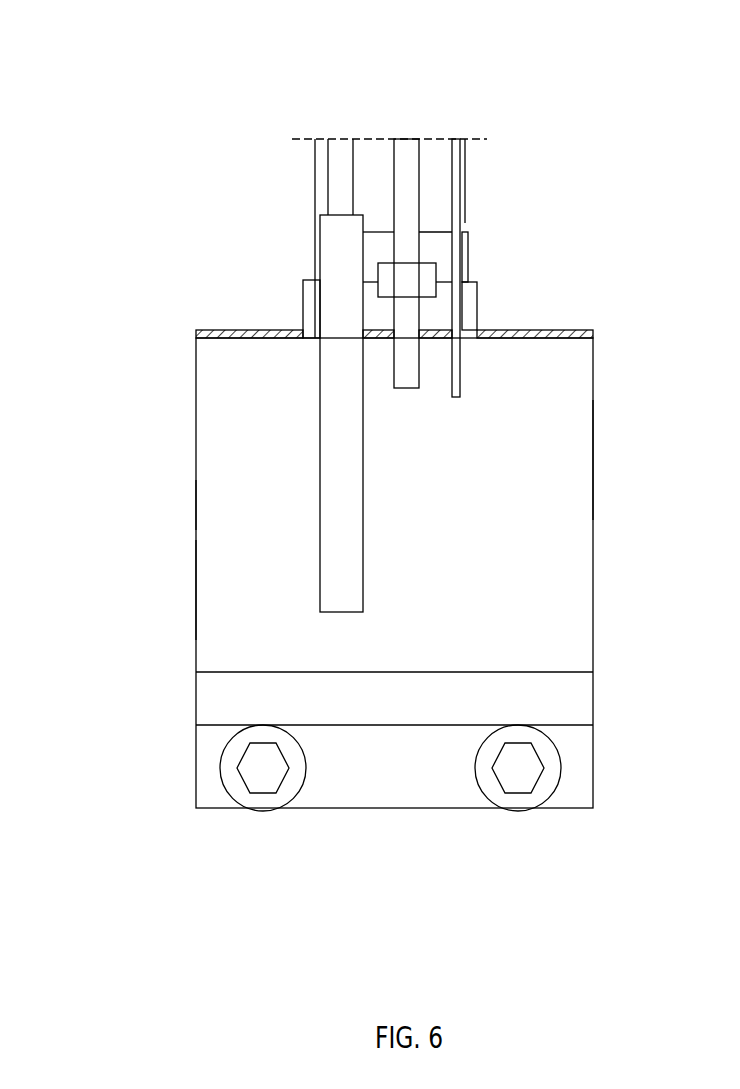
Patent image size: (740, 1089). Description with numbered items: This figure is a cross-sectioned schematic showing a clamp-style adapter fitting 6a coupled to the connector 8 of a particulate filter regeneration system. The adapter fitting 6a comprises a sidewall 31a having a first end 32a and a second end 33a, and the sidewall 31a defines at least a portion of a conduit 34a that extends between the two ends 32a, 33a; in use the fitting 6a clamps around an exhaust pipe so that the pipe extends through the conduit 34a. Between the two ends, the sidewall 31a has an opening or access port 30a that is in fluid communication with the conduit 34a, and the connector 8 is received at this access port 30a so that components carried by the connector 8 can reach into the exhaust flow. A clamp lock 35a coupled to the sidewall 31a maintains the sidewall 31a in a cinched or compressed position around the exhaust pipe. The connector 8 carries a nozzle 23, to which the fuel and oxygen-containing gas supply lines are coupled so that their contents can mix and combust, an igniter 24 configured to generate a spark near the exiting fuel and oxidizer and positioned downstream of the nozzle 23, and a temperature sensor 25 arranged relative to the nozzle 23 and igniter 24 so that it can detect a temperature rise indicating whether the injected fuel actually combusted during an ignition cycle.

The adapter fitting 6a is at (203, 472).
The connector 8 is at (315, 258).
The nozzle 23 is at (337, 257).
The igniter 24 is at (453, 190).
The temperature sensor 25 is at (400, 140).
The access port 30a is at (468, 312).
The sidewall 31a is at (548, 329).
The first end 32a is at (602, 432).
The second end 33a is at (182, 602).
The conduit 34a is at (227, 505).
The clamp lock 35a is at (543, 778).